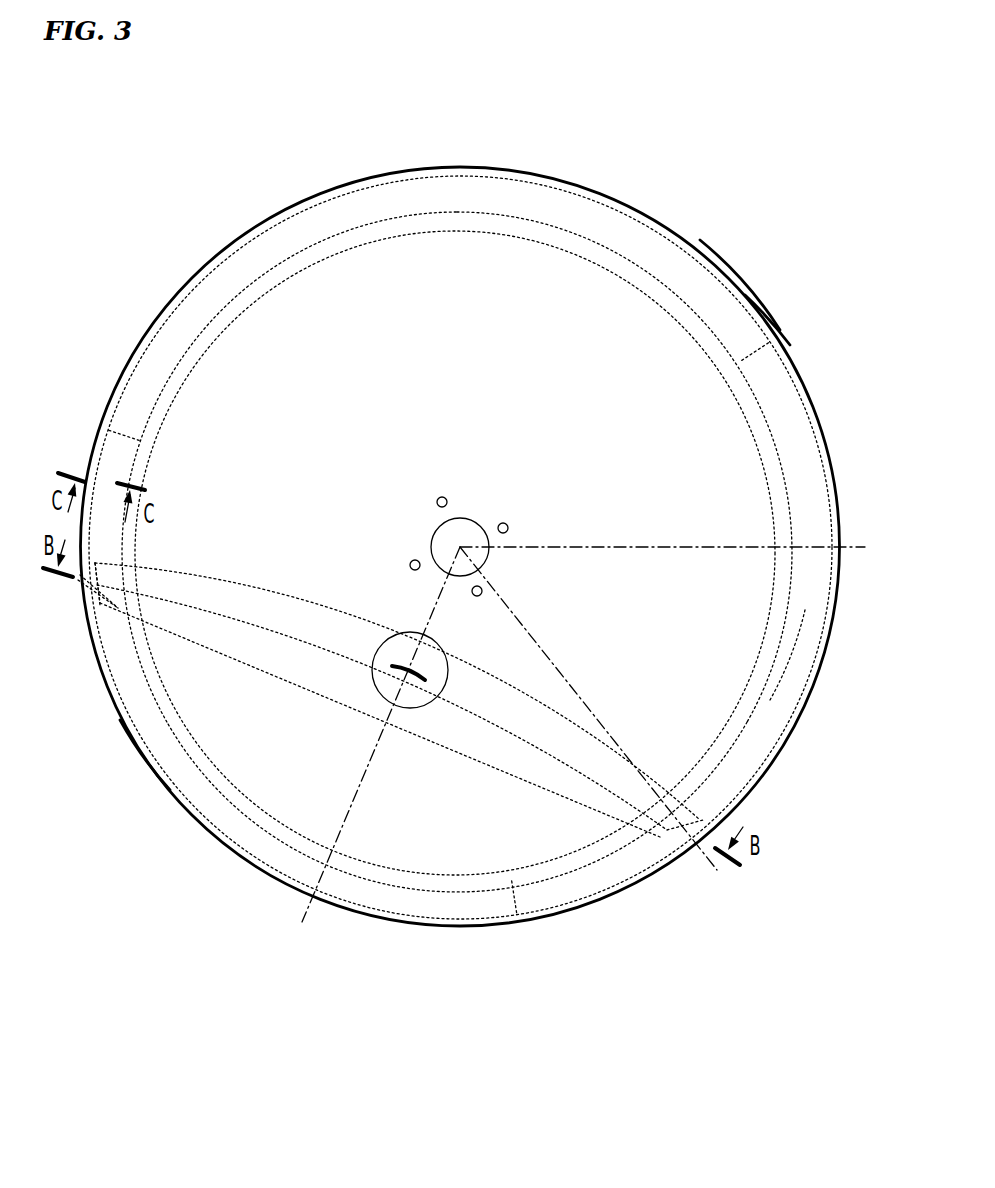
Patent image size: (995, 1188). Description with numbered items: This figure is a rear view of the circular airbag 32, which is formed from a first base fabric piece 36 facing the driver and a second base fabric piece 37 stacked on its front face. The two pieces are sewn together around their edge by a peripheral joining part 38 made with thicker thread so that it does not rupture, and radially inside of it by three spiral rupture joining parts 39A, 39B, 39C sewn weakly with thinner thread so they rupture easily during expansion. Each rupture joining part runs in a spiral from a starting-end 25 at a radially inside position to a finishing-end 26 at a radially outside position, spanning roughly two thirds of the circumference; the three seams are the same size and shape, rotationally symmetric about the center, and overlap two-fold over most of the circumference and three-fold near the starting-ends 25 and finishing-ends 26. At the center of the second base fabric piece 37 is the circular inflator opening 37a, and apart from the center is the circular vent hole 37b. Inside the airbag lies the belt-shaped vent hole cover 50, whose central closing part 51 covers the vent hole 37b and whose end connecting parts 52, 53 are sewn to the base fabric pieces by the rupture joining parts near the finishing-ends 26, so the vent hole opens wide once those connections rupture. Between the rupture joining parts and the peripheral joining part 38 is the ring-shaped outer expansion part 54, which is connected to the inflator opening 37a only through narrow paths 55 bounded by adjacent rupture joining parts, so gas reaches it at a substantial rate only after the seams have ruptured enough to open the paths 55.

The starting-end 25 is at (258, 300).
The finishing-end 26 is at (276, 250).
The airbag 32 is at (622, 198).
The first base fabric piece 36 is at (772, 317).
The second base fabric piece 37 is at (742, 288).
The inflator opening 37a is at (474, 522).
The vent hole 37b is at (380, 667).
The peripheral joining part 38 is at (143, 752).
The rupture joining part 39A is at (658, 288).
The rupture joining part 39B is at (548, 862).
The rupture joining part 39C is at (200, 345).
The vent hole cover 50 is at (505, 783).
The closing part 51 is at (390, 715).
The connecting part 52 is at (662, 838).
The connecting part 53 is at (116, 607).
The outer expansion part 54 is at (792, 650).
The path 55 is at (747, 357).